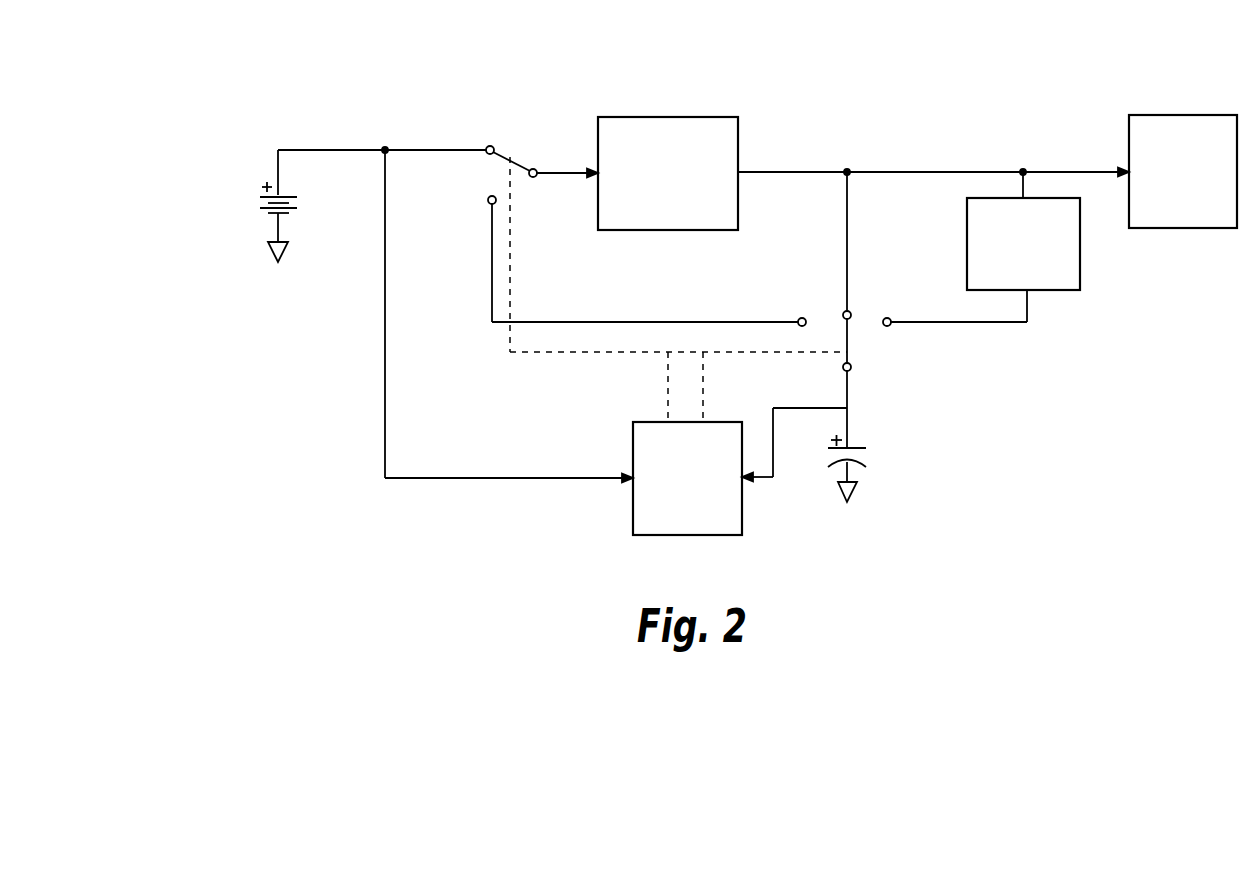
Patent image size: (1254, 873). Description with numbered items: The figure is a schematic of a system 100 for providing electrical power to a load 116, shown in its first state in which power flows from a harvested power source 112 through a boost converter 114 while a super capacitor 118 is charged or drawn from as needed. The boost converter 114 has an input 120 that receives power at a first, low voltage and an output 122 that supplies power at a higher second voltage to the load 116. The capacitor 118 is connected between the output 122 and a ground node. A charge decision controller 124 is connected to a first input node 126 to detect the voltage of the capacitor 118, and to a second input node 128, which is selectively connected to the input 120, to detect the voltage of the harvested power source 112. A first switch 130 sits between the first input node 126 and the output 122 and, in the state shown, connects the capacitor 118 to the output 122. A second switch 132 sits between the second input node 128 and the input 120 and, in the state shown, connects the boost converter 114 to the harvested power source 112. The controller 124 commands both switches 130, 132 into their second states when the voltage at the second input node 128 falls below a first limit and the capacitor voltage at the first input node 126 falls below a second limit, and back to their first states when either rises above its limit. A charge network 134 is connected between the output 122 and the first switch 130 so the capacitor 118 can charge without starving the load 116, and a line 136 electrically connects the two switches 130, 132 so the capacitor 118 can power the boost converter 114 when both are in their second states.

The system 100 is at (453, 68).
The harvested power source 112 is at (307, 210).
The boost converter 114 is at (640, 117).
The load 116 is at (1159, 115).
The capacitor 118 is at (870, 505).
The input 120 is at (582, 178).
The output 122 is at (753, 153).
The charge decision controller 124 is at (720, 545).
The first input node 126 is at (847, 408).
The second input node 128 is at (380, 133).
The first switch 130 is at (785, 303).
The second switch 132 is at (528, 157).
The charge network 134 is at (1082, 253).
The line 136 is at (615, 322).